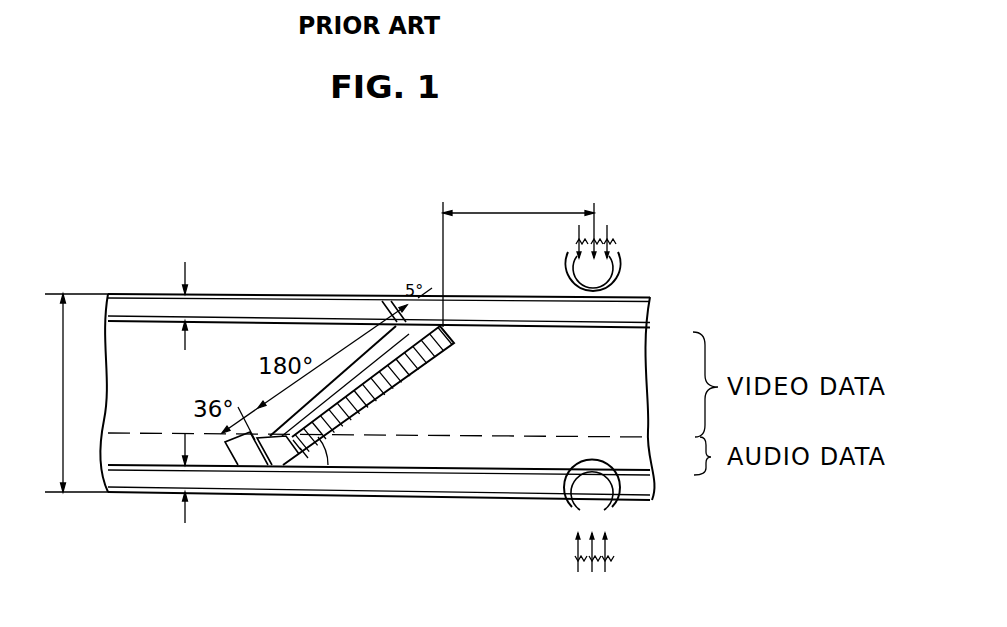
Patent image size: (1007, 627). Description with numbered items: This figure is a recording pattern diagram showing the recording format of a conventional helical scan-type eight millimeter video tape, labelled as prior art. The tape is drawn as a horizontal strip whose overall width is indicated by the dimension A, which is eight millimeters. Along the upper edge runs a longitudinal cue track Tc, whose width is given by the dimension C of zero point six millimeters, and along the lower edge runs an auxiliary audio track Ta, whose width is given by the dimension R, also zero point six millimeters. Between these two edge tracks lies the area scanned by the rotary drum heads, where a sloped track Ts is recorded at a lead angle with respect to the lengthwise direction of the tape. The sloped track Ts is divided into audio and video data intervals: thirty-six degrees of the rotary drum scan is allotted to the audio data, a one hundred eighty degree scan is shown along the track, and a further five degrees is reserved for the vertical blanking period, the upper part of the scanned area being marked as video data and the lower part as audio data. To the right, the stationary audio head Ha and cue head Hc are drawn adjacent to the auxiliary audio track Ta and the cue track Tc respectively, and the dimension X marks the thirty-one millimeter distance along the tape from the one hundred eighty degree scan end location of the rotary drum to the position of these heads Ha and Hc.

The overall width of the video tape A is at (71, 393).
The cue track dimension C is at (173, 305).
The auxiliary audio track dimension R is at (173, 478).
The cue track Tc is at (257, 298).
The sloped track Ts is at (332, 373).
The auxiliary audio track Ta is at (257, 492).
The cue head Hc is at (566, 260).
The audio head Ha is at (563, 524).
The distance along the tape X is at (518, 256).